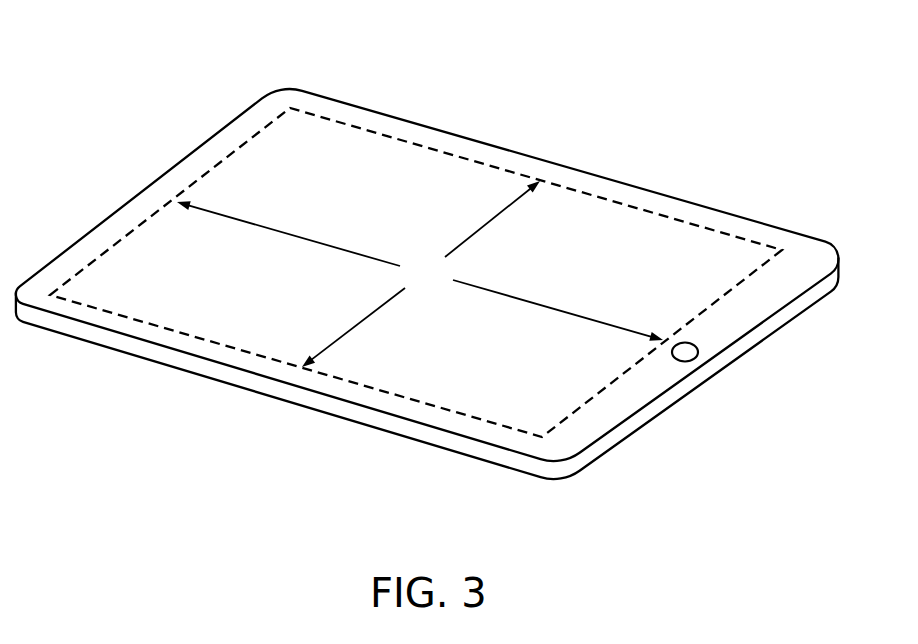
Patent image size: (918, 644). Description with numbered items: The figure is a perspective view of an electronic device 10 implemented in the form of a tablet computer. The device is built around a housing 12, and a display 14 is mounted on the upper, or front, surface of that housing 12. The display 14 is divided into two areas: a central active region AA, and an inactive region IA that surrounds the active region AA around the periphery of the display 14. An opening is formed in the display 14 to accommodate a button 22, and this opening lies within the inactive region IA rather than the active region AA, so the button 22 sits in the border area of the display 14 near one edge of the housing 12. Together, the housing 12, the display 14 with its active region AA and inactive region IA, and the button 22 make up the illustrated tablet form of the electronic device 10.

The electronic device 10 is at (446, 252).
The housing 12 is at (807, 292).
The display 14 is at (370, 147).
The button 22 is at (698, 353).
The active region AA is at (420, 274).
The inactive region IA is at (140, 206).